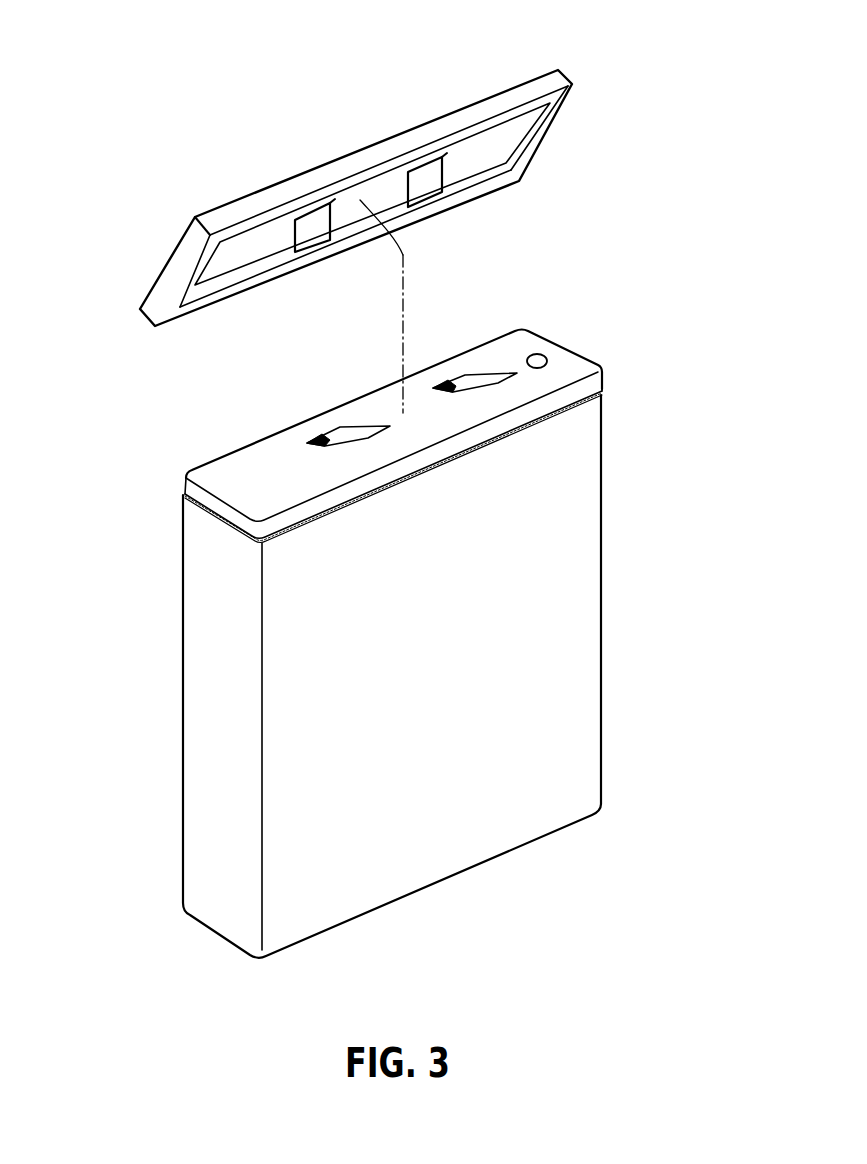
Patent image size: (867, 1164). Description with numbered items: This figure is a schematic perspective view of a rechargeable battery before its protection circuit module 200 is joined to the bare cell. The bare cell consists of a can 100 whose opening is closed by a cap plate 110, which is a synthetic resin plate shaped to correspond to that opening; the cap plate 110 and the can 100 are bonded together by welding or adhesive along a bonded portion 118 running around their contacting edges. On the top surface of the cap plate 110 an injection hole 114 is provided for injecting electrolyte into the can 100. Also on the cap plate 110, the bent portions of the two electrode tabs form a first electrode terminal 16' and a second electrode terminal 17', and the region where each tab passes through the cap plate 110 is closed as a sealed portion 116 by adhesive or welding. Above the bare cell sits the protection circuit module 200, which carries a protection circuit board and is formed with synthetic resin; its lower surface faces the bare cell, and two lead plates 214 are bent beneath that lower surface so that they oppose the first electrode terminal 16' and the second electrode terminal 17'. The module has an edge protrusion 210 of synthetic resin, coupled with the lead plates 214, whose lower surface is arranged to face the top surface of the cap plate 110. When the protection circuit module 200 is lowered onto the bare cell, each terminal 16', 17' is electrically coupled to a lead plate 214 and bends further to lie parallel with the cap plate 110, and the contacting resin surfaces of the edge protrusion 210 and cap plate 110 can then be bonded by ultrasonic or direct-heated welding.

The can 100 is at (583, 582).
The cap plate 110 is at (233, 465).
The injection hole 114 is at (540, 356).
The sealed portion 116 is at (286, 411).
The bonded portion 118 is at (578, 403).
The first electrode terminal 16' is at (222, 482).
The second electrode terminal 17' is at (475, 338).
The protection circuit module 200 is at (397, 213).
The edge protrusion 210 is at (497, 108).
The lead plates 214 is at (412, 190).